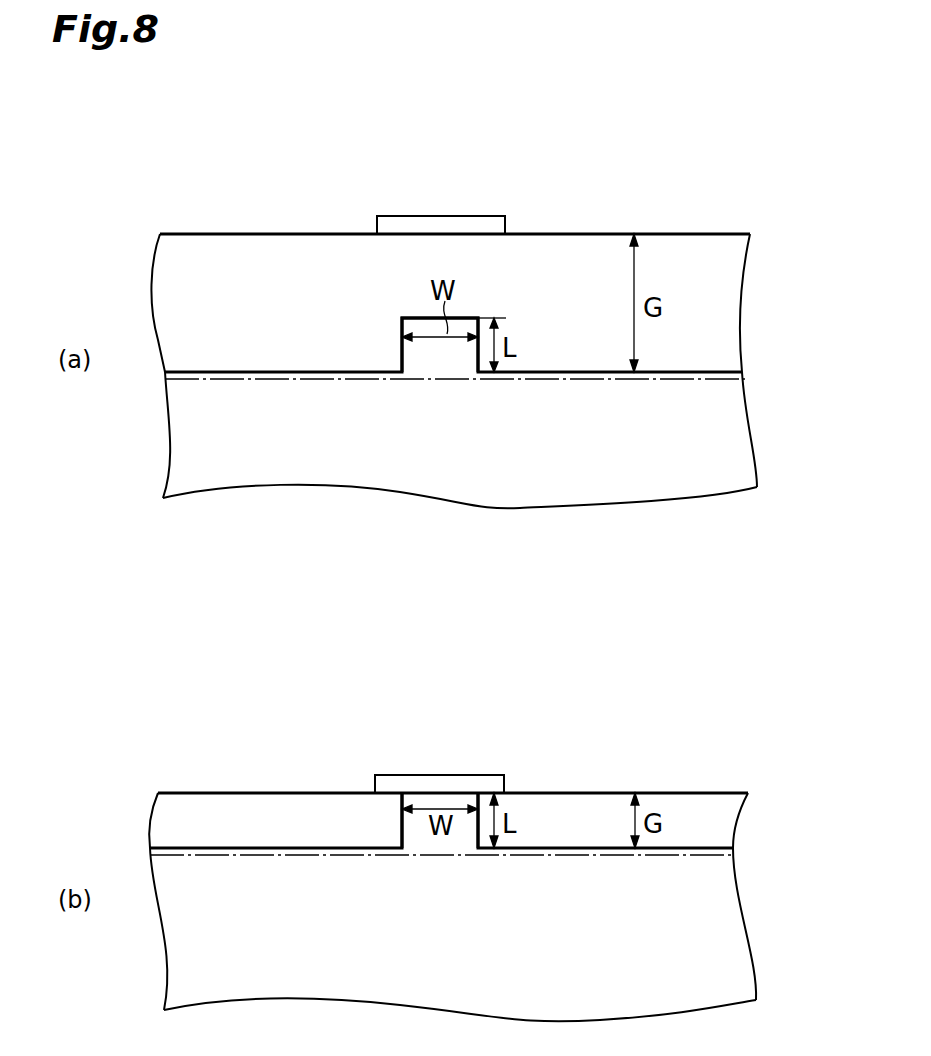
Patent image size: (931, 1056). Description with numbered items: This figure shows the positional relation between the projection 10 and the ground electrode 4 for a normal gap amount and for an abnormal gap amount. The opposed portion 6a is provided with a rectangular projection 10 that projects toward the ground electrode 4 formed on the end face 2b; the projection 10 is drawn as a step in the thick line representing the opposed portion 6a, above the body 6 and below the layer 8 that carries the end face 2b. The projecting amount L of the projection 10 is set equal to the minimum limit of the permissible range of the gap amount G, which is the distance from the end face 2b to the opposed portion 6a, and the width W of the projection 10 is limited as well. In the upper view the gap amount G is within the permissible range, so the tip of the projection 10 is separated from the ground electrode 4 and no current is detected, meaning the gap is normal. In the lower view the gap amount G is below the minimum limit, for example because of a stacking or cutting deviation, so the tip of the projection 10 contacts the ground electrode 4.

The end face 2b is at (587, 233).
The ground electrode 4 is at (448, 228).
The substrate 6 is at (740, 436).
The opposed portion 6a is at (253, 397).
The layer 8 is at (205, 247).
The projection 10 is at (400, 350).